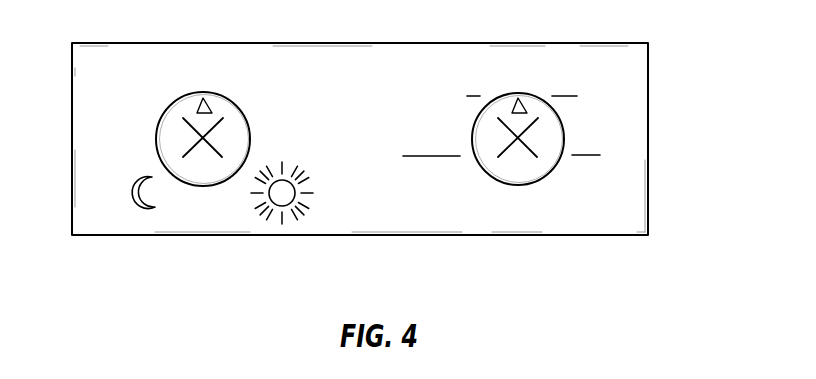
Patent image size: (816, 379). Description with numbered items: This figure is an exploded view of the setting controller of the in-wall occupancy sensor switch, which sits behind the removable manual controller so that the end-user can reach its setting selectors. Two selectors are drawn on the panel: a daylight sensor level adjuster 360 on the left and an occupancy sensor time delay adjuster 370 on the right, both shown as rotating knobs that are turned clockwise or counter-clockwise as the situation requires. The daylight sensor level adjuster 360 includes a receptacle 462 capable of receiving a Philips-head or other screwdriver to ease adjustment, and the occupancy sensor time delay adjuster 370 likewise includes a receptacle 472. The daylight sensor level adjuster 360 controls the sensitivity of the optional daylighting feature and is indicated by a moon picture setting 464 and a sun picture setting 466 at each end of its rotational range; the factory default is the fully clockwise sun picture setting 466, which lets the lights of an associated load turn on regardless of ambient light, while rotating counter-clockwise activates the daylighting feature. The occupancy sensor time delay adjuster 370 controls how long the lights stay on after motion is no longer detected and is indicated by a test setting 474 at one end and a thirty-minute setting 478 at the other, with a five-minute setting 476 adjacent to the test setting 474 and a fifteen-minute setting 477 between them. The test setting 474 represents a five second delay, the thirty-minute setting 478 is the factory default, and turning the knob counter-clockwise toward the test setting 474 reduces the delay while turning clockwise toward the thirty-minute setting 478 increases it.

The daylight sensor level adjuster 360 is at (183, 93).
The occupancy sensor time delay adjuster 370 is at (553, 170).
The receptacle 462 is at (185, 153).
The moon picture setting 464 is at (145, 207).
The sun picture setting 466 is at (286, 205).
The receptacle 472 is at (500, 155).
The "TEST" setting 474 is at (423, 122).
The 5 label 476 is at (475, 63).
The "15" setting 477 is at (563, 63).
The "30" setting 478 is at (603, 137).